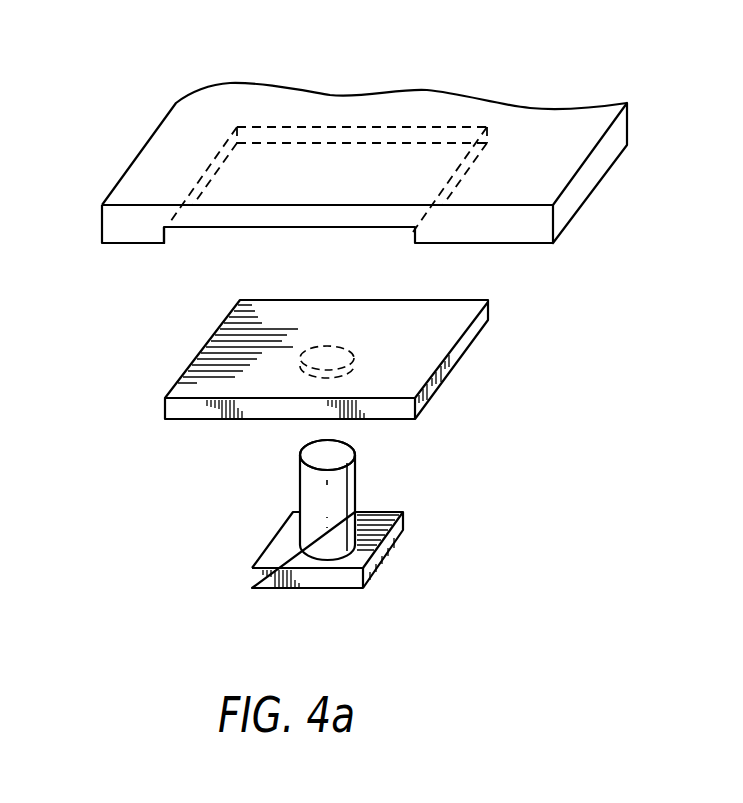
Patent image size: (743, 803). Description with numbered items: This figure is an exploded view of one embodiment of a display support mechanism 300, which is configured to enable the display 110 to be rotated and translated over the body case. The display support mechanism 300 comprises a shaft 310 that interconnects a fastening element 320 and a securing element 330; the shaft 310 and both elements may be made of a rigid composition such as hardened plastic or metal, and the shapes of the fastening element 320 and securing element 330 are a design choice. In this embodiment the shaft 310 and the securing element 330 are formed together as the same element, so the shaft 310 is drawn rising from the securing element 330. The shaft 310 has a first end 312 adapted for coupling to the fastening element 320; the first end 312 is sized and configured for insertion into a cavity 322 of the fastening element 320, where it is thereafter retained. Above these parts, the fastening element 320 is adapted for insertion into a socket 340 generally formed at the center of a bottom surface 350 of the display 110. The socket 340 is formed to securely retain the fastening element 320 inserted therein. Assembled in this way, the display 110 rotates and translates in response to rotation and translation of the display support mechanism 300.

The display 110 is at (553, 224).
The display support mechanism 300 is at (575, 387).
The shaft 310 is at (300, 495).
The first end 312 is at (300, 467).
The fastening element 320 is at (468, 337).
The cavity 322 is at (328, 362).
The securing element 330 is at (252, 575).
The socket 340 is at (388, 232).
The bottom surface 350 is at (132, 243).